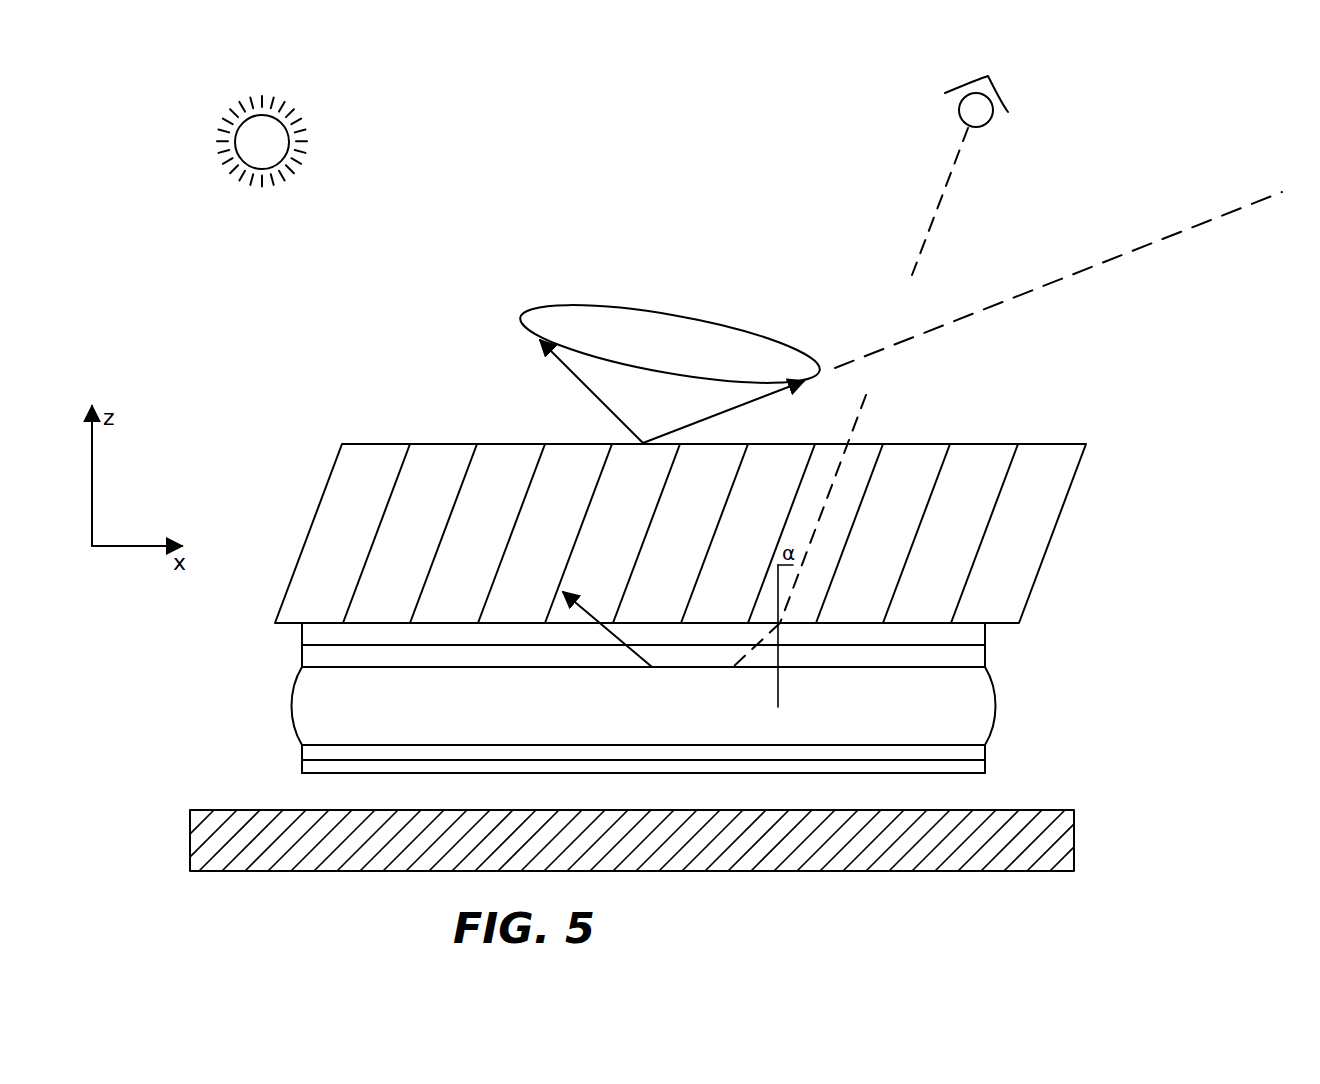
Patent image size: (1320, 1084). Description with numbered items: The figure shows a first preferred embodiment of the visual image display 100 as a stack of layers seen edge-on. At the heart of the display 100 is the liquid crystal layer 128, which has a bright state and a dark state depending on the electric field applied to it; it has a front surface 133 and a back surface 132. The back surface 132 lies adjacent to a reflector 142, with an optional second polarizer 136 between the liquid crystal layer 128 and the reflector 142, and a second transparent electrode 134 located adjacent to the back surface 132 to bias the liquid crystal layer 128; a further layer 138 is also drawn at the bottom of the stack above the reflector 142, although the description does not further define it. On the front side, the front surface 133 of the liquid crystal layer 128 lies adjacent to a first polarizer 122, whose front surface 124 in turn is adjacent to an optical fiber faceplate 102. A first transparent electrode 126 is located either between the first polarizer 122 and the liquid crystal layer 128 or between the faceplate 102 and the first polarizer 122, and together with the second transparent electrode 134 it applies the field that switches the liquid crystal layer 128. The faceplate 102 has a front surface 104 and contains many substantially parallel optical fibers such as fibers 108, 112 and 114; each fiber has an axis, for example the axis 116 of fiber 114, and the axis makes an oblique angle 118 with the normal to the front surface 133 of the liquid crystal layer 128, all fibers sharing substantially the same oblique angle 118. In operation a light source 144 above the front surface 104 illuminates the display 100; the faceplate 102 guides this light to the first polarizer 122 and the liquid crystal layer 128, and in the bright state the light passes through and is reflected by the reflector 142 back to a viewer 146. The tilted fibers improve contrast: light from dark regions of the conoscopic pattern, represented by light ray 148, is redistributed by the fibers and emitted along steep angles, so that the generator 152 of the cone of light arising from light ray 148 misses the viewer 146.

The visual image display 100 is at (1133, 367).
The optical fiber faceplate 102 is at (703, 493).
The front surface 104 is at (365, 443).
The optical fiber 108 is at (350, 488).
The optical fiber 112 is at (382, 580).
The optical fiber 114 is at (813, 588).
The axis 116 is at (812, 540).
The oblique angle 118 is at (800, 540).
The first polarizer 122 is at (985, 645).
The front surface 124 is at (305, 634).
The first transparent electrode 126 is at (985, 664).
The liquid crystal layer 128 is at (996, 706).
The back surface 132 is at (352, 745).
The front surface 133 is at (300, 678).
The second transparent electrode 134 is at (985, 750).
The second polarizer 136 is at (985, 768).
The layer 138 is at (350, 773).
The reflector 142 is at (1075, 852).
The light source 144 is at (318, 147).
The viewer 146 is at (1025, 120).
The light ray 148 is at (592, 633).
The generator 152 is at (742, 400).